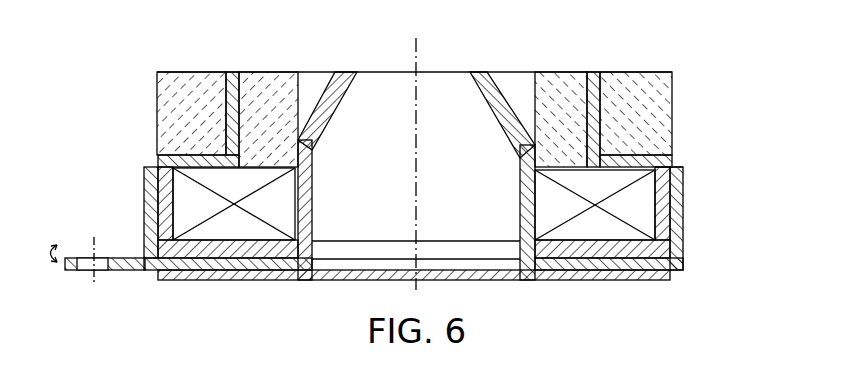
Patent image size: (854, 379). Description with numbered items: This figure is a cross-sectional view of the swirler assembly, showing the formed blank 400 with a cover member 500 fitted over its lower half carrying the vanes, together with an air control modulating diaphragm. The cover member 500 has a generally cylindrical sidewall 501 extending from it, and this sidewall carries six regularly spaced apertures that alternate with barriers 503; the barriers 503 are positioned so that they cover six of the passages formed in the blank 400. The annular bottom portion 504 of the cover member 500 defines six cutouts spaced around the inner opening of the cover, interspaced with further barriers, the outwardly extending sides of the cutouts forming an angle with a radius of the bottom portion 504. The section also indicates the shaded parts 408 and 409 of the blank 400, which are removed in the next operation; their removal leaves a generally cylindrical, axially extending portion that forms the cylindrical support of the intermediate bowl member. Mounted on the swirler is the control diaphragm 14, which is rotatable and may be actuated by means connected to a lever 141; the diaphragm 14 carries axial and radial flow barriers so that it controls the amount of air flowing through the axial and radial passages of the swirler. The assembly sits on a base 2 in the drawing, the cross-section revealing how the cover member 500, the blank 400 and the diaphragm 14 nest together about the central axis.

The base plate 2 is at (188, 284).
The control diaphragm 14 is at (148, 230).
The lever 141 is at (85, 268).
The blank 400 is at (673, 105).
The shaded part of the blank 408 is at (198, 88).
The shaded part of the blank 409 is at (265, 88).
The cover member 500 is at (363, 248).
The cylindrical sidewall 501 is at (170, 193).
The barrier 503 is at (647, 206).
The annular bottom portion 504 is at (637, 231).